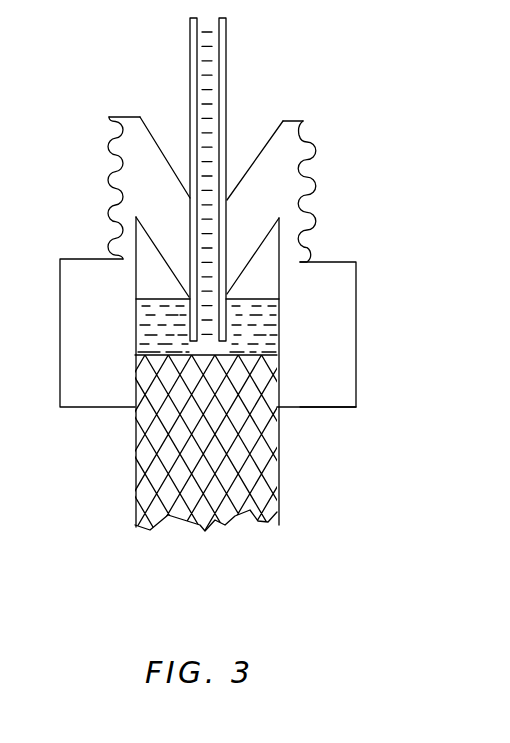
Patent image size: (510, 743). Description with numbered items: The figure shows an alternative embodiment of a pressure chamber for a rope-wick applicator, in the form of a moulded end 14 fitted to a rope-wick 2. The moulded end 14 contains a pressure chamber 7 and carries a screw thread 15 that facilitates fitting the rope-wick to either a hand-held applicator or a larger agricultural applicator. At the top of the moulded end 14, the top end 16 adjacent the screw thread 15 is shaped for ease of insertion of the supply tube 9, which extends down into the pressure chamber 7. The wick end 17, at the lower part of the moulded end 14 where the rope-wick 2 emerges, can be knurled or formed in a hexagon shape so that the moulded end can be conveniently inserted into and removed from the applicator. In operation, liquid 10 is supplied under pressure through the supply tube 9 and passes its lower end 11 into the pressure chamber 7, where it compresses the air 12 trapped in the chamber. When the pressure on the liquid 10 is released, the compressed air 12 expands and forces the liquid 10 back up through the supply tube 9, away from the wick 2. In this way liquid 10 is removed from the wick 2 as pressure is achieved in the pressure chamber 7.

The rope-wick 2 is at (277, 508).
The pressure chamber 7 is at (158, 330).
The supply tube 9 is at (227, 67).
The liquid 10 is at (270, 320).
The lower end of supply tube 11 is at (227, 337).
The air 12 is at (150, 275).
The moulded end 14 is at (363, 303).
The screw thread 15 is at (320, 147).
The top end 16 is at (152, 135).
The wick end 17 is at (357, 407).